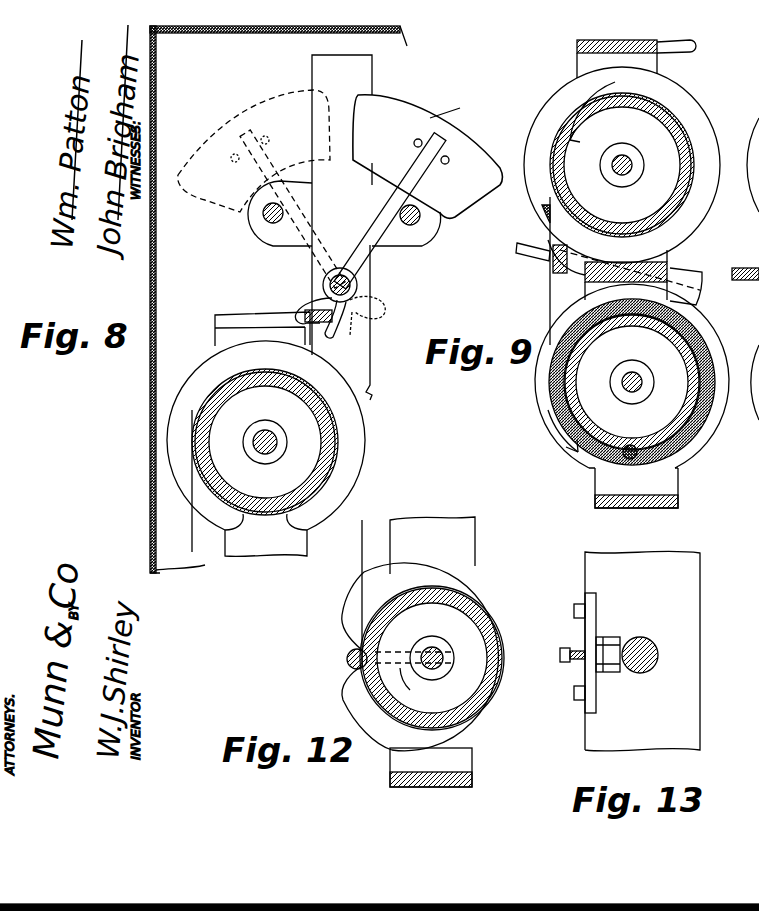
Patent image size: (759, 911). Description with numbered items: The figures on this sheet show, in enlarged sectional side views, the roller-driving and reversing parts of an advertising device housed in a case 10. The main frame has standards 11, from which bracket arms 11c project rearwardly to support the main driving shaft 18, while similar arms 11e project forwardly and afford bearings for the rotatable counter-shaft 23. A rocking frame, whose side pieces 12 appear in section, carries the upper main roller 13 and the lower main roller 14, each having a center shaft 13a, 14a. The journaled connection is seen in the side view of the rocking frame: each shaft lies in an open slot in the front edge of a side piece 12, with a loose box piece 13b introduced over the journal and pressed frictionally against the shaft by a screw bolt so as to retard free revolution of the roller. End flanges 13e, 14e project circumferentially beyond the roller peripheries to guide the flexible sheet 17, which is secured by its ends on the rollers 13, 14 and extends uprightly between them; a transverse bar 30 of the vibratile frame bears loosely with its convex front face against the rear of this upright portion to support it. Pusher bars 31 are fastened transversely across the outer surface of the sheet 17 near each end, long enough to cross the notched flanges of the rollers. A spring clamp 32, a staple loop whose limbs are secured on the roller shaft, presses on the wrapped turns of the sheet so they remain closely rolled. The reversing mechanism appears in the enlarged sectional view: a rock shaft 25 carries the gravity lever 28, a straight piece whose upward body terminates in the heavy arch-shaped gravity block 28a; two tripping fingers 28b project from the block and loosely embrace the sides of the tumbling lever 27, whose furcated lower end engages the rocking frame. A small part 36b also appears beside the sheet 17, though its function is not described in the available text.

In FIG. 8, the case 10 is at (272, 33).
In FIG. 8, the standards 11 is at (372, 72).
In FIG. 9, the standards 11 is at (668, 265).
In FIG. 8, the bracket arms 11c is at (290, 246).
In FIG. 8, the arms 11e is at (403, 248).
In FIG. 8, the side pieces of the rocking frame 12 is at (212, 346).
In FIG. 9, the side pieces of the rocking frame 12 is at (680, 486).
In FIG. 12, the side pieces of the rocking frame 12 is at (432, 652).
In FIG. 13, the side pieces of the rocking frame 12 is at (642, 651).
In FIG. 8, the upper main roller 13 is at (265, 442).
In FIG. 9, the upper main roller 13 is at (622, 165).
In FIG. 8, the center shaft of the upper roller 13a is at (275, 442).
In FIG. 9, the center shaft of the upper roller 13a is at (630, 170).
In FIG. 13, the center shaft of the upper roller 13a is at (612, 672).
In FIG. 13, the loose box piece 13b is at (586, 706).
In FIG. 8, the end flange of the upper roller 13e is at (358, 460).
In FIG. 9, the end flange of the upper roller 13e is at (700, 118).
In FIG. 9, the lower main roller 14 is at (632, 382).
In FIG. 12, the lower main roller 14 is at (432, 658).
In FIG. 9, the center shaft of the lower roller 14a is at (640, 385).
In FIG. 12, the center shaft of the lower roller 14a is at (442, 658).
In FIG. 13, the center shaft of the lower roller 14a is at (656, 652).
In FIG. 9, the end flange of the lower roller 14e is at (700, 440).
In FIG. 12, the end flange of the lower roller 14e is at (514, 600).
In FIG. 8, the flexible sheet 17 is at (190, 542).
In FIG. 9, the flexible sheet 17 is at (552, 294).
In FIG. 12, the flexible sheet 17 is at (362, 577).
In FIG. 8, the main driving shaft 18 is at (268, 222).
In FIG. 8, the counter-shaft 23 is at (432, 222).
In FIG. 8, the rock shaft 25 is at (330, 285).
In FIG. 8, the tumbling lever 27 is at (423, 176).
In FIG. 8, the gravity lever 28 is at (378, 255).
In FIG. 8, the gravity block 28a is at (453, 105).
In FIG. 8, the tripping fingers 28b is at (414, 142).
In FIG. 9, the transverse bar 30 is at (698, 296).
In FIG. 9, the pusher bars 31 is at (546, 221).
In FIG. 12, the pusher bars 31 is at (350, 664).
In FIG. 12, the spring clamp 32 is at (415, 675).
In FIG. 9, the stop bar 36b is at (530, 255).